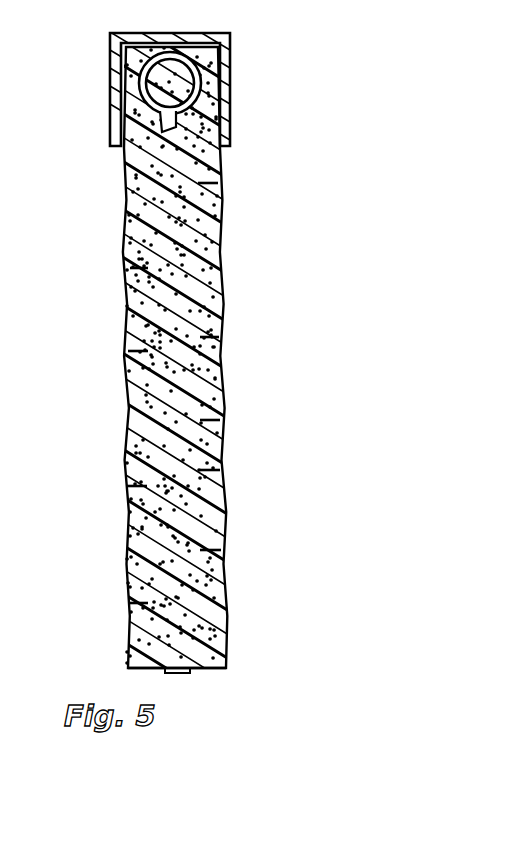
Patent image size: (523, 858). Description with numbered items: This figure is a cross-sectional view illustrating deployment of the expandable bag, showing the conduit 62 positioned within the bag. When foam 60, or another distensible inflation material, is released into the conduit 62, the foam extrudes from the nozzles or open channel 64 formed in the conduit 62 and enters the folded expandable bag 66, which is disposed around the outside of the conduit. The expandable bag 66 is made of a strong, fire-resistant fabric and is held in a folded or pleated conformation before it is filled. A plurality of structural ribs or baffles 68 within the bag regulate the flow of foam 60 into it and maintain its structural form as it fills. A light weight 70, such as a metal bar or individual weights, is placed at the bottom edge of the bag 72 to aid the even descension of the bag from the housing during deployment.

The foam 60 is at (215, 106).
The conduit 62 is at (215, 84).
The nozzles or open channel 64 is at (222, 172).
The expandable bag 66 is at (222, 243).
The structural ribs or baffles 68 is at (222, 420).
The light weight 70 is at (190, 673).
The bottom edge of the bag 72 is at (127, 608).